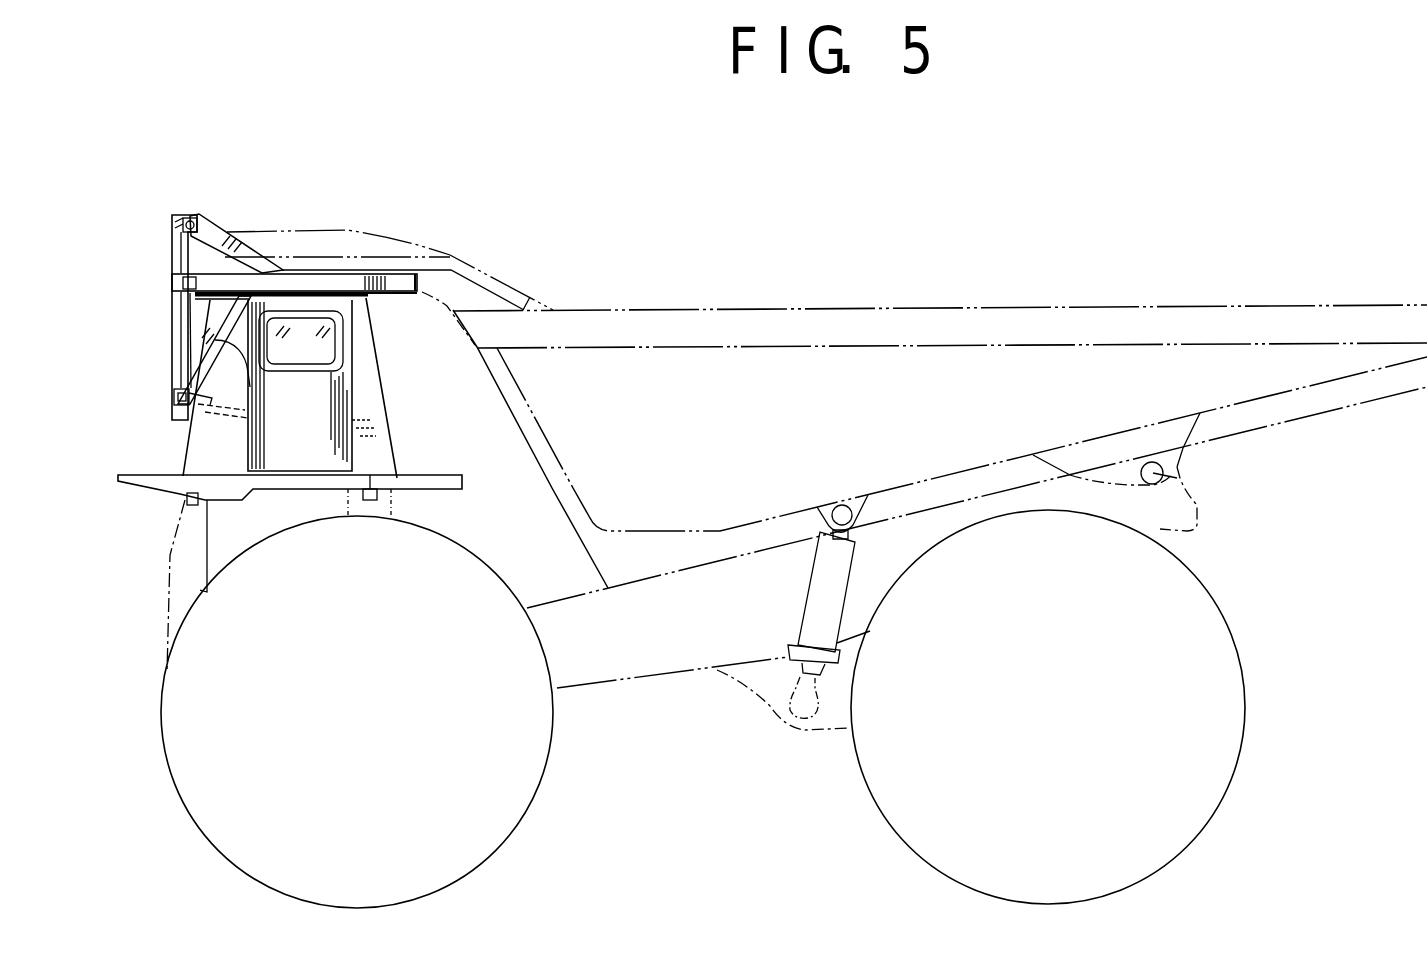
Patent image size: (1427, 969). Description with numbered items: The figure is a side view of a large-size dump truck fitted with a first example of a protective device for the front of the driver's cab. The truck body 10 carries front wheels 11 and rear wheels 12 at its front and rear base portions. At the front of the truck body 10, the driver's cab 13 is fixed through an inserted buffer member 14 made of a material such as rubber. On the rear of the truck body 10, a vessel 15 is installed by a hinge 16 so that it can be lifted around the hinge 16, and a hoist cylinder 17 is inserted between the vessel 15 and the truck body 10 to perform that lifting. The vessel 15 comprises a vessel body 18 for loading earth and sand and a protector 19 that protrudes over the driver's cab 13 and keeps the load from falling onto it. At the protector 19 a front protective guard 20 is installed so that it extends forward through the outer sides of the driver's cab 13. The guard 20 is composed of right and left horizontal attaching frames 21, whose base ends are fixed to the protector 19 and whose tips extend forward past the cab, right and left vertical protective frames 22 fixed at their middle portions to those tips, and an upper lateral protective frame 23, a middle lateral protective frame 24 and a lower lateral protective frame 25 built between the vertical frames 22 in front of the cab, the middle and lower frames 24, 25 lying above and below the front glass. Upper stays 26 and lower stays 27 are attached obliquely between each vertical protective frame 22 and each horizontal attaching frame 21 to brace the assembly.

The truck body 10 is at (700, 657).
The front wheels 11 is at (530, 772).
The rear wheels 12 is at (1205, 795).
The driver's cab 13 is at (372, 401).
The buffer member 14 is at (371, 474).
The vessel 15 is at (748, 356).
The hinge 16 is at (1185, 484).
The hoist cylinder 17 is at (813, 587).
The vessel body 18 is at (671, 366).
The protector 19 is at (352, 246).
The front protective guard 20 is at (172, 288).
The horizontal attaching frames 21 is at (308, 285).
The vertical protective frames 22 is at (172, 258).
The upper lateral protective frame 23 is at (198, 218).
The middle lateral protective frame 24 is at (178, 315).
The lower lateral protective frame 25 is at (176, 400).
The upper stays 26 is at (229, 240).
The lower stays 27 is at (300, 385).